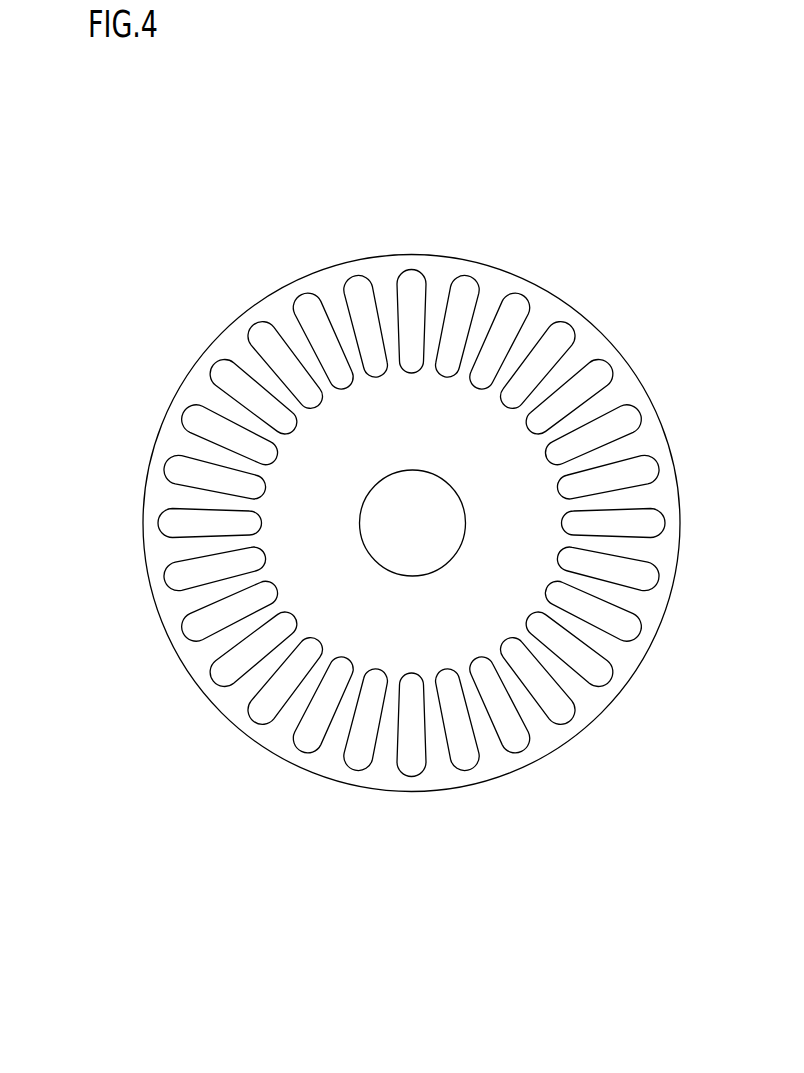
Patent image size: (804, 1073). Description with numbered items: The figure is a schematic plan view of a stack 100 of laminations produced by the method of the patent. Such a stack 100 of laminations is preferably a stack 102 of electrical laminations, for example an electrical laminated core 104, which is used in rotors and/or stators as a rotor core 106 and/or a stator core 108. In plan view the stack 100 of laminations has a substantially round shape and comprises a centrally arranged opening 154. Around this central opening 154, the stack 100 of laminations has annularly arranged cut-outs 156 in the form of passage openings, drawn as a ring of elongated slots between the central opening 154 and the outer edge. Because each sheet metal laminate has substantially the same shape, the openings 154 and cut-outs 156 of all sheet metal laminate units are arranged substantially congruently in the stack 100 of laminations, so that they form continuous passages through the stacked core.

The stack of laminations 100 is at (508, 103).
The stack of electrical laminations 102 is at (525, 238).
The electrical laminated core 104 is at (578, 258).
The rotor core 106 is at (633, 293).
The stator core 108 is at (678, 325).
The centrally arranged opening 154 is at (412, 535).
The cut-outs 156 is at (623, 628).